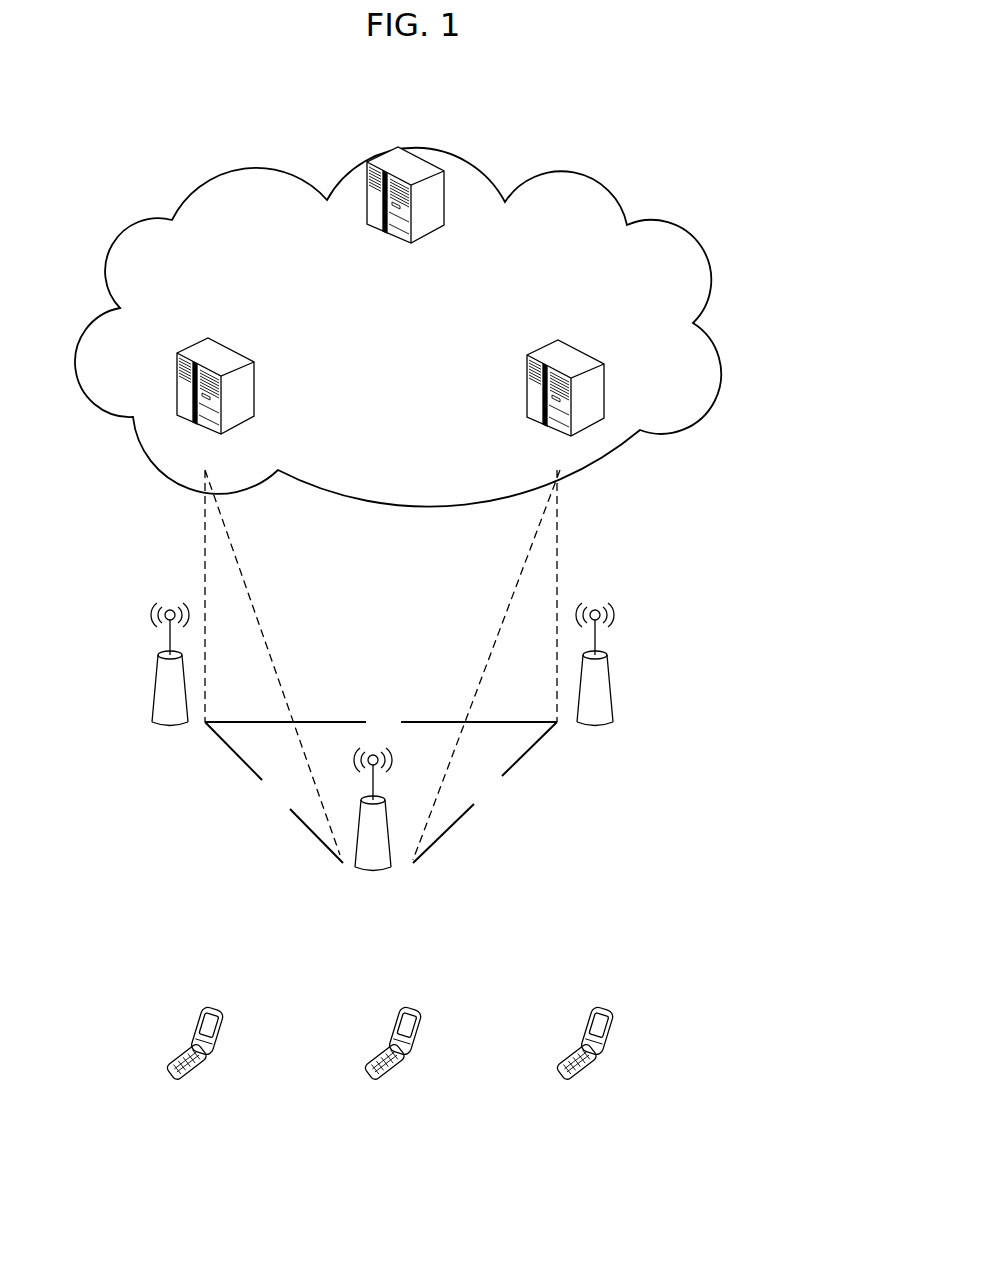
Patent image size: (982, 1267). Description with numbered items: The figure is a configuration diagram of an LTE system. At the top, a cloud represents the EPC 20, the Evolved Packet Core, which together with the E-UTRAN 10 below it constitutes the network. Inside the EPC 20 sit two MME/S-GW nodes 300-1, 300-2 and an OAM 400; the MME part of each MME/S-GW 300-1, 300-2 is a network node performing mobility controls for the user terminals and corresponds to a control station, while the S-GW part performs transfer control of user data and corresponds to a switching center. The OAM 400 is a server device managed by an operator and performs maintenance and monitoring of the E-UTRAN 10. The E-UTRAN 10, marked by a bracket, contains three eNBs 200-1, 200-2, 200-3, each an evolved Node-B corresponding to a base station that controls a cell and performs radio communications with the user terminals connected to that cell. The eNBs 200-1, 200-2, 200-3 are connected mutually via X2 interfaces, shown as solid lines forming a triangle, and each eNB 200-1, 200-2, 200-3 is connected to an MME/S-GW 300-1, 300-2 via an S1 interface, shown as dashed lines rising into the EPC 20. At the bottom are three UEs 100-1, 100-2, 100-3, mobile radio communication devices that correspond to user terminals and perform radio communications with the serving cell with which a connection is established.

The E-UTRAN 10 is at (429, 690).
The EPC 20 is at (607, 190).
The UE 100-1 is at (216, 1006).
The UE 100-2 is at (414, 1006).
The UE 100-3 is at (606, 1006).
The eNB 200-1 is at (150, 686).
The eNB 200-2 is at (390, 845).
The eNB 200-3 is at (608, 668).
The MME/S-GW 300-1 is at (235, 348).
The MME/S-GW 300-2 is at (579, 348).
The OAM 400 is at (392, 144).